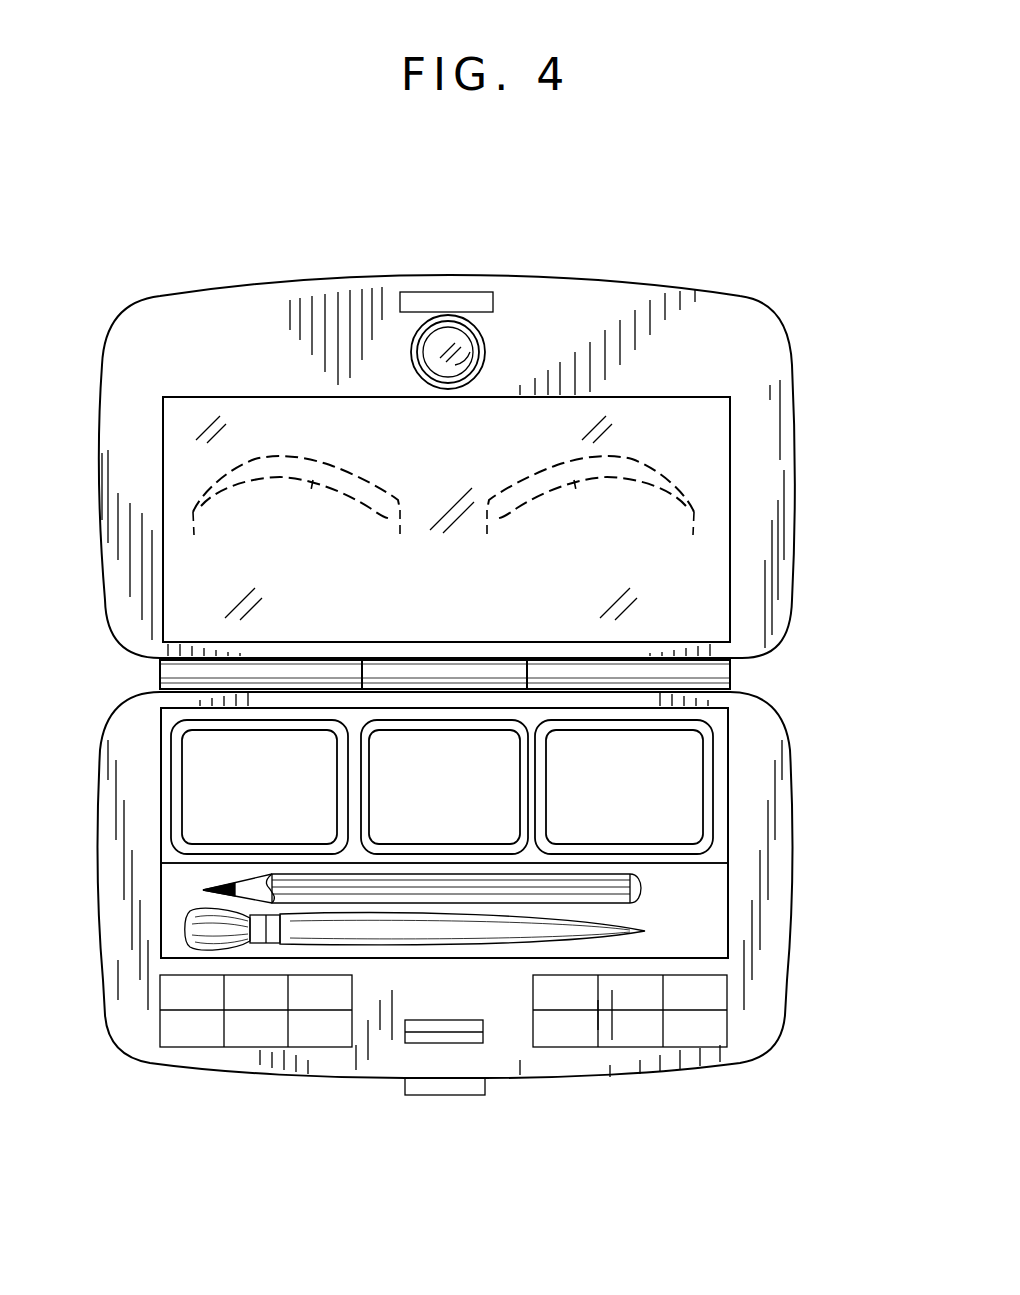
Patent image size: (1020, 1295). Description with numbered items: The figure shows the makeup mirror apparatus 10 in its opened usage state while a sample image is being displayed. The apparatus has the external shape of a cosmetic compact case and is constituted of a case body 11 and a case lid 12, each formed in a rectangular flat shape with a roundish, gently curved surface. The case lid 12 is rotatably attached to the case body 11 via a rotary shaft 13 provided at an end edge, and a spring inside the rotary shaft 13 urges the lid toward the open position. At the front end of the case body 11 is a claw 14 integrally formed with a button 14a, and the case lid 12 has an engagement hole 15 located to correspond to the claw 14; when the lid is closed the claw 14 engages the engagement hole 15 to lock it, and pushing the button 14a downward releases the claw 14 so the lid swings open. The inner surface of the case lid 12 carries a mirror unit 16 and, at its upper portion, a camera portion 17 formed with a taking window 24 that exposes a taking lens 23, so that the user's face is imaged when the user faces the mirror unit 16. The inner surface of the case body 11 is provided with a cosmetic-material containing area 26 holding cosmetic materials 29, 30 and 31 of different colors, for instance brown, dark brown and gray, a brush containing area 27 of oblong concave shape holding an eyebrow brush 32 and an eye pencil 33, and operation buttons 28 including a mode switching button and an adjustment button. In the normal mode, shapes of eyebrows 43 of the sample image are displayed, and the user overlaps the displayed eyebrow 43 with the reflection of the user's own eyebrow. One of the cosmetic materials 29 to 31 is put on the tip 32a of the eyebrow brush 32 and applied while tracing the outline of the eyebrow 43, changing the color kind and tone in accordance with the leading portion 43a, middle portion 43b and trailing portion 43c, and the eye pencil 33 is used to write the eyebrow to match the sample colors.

The makeup mirror apparatus 10 is at (173, 265).
The case body 11 is at (797, 793).
The case lid 12 is at (787, 348).
The rotary shaft 13 is at (715, 672).
The claw 14 is at (451, 1032).
The button 14a is at (445, 1097).
The engagement hole 15 is at (392, 292).
The mirror unit 16 is at (190, 452).
The camera portion 17 is at (485, 338).
The taking lens 23 is at (450, 370).
The taking window 24 is at (417, 351).
The cosmetic-material containing area 26 is at (170, 850).
The brush containing area 27 is at (178, 893).
The operation buttons 28 is at (202, 1037).
The cosmetic material 29 is at (249, 802).
The cosmetic material 30 is at (424, 802).
The cosmetic material 31 is at (602, 802).
The eyebrow brush 32 is at (650, 931).
The tip 32a is at (190, 928).
The eye pencil 33 is at (640, 890).
The eyebrow 43 is at (255, 440).
The leading portion 43a is at (400, 535).
The middle portion 43b is at (311, 490).
The trailing portion 43c is at (194, 535).